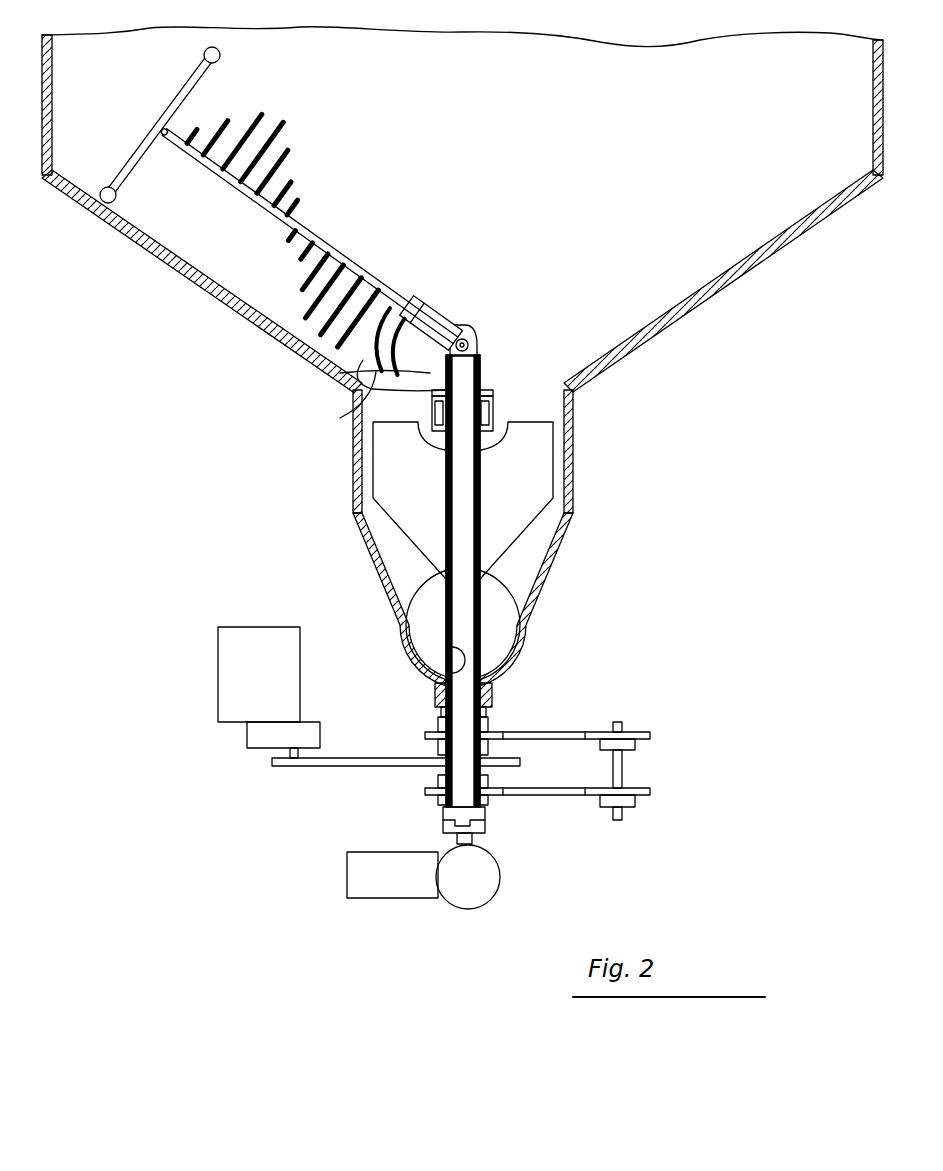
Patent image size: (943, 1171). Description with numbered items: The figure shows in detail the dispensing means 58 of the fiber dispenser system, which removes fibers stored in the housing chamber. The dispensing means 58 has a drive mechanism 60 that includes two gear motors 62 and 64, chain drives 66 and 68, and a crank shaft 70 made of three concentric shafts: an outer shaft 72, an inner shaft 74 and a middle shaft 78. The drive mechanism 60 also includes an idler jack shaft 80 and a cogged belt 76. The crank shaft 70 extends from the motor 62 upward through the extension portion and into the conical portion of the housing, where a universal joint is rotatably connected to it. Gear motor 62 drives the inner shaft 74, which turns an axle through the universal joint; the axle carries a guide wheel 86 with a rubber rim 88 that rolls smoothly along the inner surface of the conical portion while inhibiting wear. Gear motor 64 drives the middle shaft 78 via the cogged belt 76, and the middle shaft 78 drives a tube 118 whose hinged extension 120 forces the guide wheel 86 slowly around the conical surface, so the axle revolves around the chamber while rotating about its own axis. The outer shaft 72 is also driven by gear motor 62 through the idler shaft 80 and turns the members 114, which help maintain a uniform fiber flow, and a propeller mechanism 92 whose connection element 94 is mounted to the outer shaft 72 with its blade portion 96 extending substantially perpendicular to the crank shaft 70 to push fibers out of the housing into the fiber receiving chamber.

The dispensing means 58 is at (486, 298).
The drive mechanism 60 is at (552, 702).
The gear motor 62 is at (353, 865).
The gear motor 64 is at (230, 650).
The chain drive 66 is at (587, 737).
The chain drive 68 is at (522, 795).
The crank shaft 70 is at (470, 488).
The outer shaft 72 is at (480, 625).
The inner shaft 74 is at (450, 648).
The cogged belt 76 is at (365, 766).
The middle shaft 78 is at (425, 738).
The idler jack shaft 80 is at (620, 768).
The guide wheel 86 is at (175, 105).
The rubber rim 88 is at (225, 50).
The propeller mechanism 92 is at (340, 375).
The connection element 94 is at (495, 390).
The blade portion 96 is at (358, 405).
The members 114 is at (380, 478).
The tube 118 is at (480, 345).
The hinged extension 120 is at (432, 315).